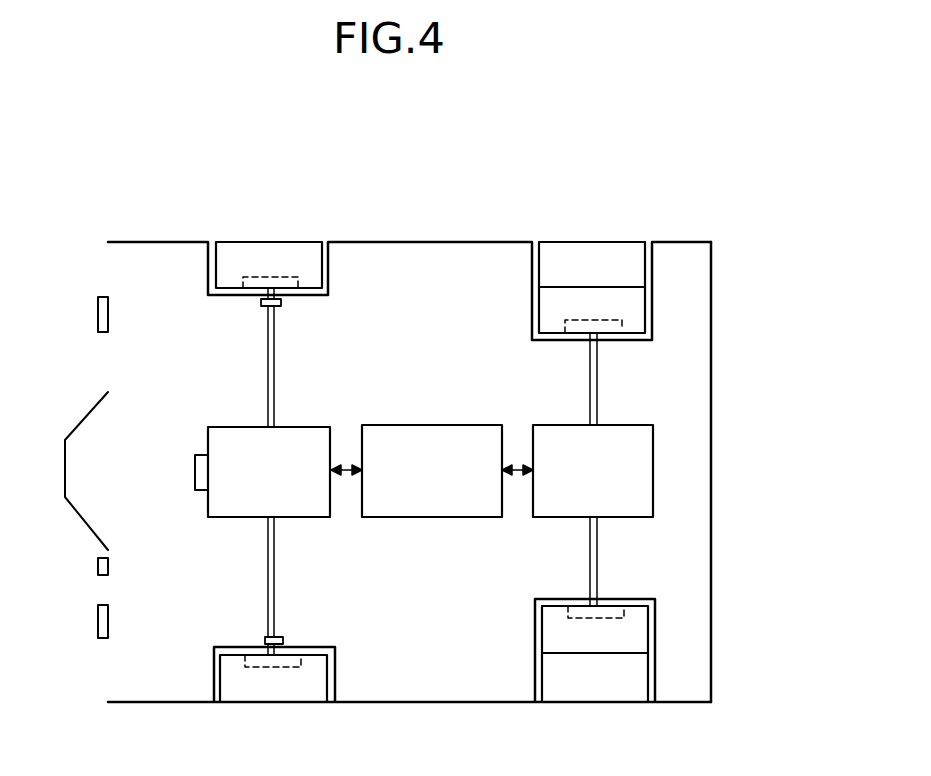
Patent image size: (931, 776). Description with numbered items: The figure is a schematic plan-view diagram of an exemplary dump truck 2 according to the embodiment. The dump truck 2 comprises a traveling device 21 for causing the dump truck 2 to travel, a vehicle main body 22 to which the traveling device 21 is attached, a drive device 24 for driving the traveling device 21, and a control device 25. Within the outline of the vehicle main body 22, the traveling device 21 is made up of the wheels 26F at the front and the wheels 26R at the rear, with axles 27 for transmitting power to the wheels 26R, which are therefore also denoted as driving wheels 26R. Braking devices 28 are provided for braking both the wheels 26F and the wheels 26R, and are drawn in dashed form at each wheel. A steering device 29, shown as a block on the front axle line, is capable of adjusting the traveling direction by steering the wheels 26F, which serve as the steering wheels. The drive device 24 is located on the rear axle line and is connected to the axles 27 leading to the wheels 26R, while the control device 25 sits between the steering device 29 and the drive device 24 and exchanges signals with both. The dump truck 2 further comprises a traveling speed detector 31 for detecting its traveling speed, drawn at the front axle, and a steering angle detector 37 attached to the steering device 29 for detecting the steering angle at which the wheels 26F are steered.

The dump truck 2 is at (696, 211).
The traveling device 21 is at (198, 237).
The vehicle main body 22 is at (720, 278).
The drive device 24 is at (626, 425).
The control device 25 is at (466, 425).
The wheels 26F is at (226, 241).
The wheels 26R is at (549, 241).
The axles 27 is at (598, 558).
The braking devices 28 is at (282, 277).
The steering device 29 is at (306, 427).
The traveling speed detector 31 is at (261, 303).
The steering angle detector 37 is at (203, 460).